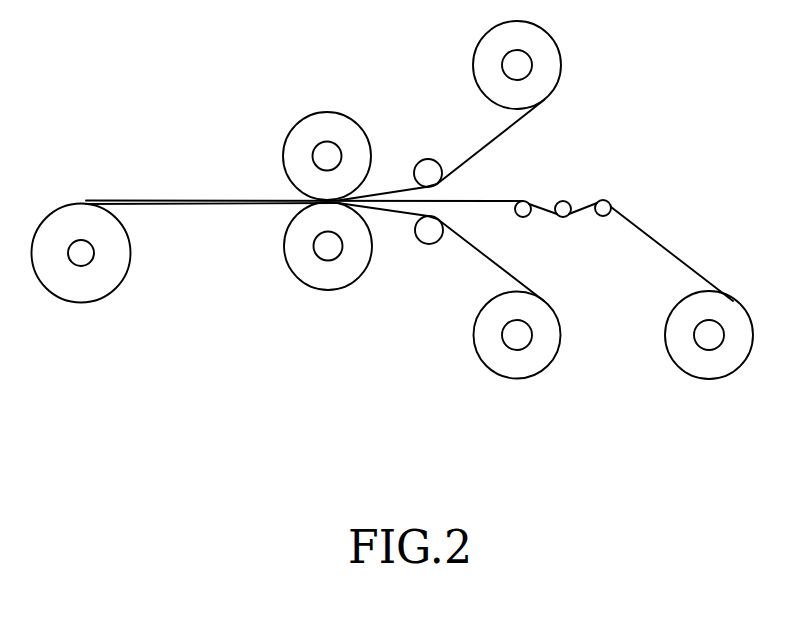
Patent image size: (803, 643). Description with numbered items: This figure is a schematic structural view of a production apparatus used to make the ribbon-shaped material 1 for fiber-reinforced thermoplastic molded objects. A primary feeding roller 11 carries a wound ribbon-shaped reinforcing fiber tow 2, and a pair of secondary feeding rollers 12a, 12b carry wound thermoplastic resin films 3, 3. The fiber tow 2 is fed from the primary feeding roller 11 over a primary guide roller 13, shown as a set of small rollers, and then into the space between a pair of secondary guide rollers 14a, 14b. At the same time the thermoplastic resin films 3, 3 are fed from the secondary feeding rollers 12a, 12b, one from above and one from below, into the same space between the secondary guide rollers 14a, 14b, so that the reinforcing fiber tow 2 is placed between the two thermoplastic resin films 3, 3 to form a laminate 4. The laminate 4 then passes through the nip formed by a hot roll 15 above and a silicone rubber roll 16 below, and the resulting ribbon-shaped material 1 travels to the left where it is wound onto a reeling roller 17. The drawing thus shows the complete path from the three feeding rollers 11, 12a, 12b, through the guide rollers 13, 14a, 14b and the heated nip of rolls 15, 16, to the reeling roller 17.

The laminated web 1 is at (194, 200).
The ribbon-shaped reinforcing fiber tow 2 is at (661, 245).
The thermoplastic resin film 3 is at (501, 134).
The laminate 4 is at (393, 191).
The primary feeding roller 11 is at (713, 379).
The secondary feeding roller 12a is at (559, 53).
The secondary feeding roller 12b is at (513, 378).
The primary guide roller 13 is at (520, 200).
The secondary guide roller 14a is at (440, 159).
The secondary guide roller 14b is at (418, 241).
The hot roll 15 is at (293, 127).
The silicone rubber roll 16 is at (299, 277).
The reeling roller 17 is at (131, 262).